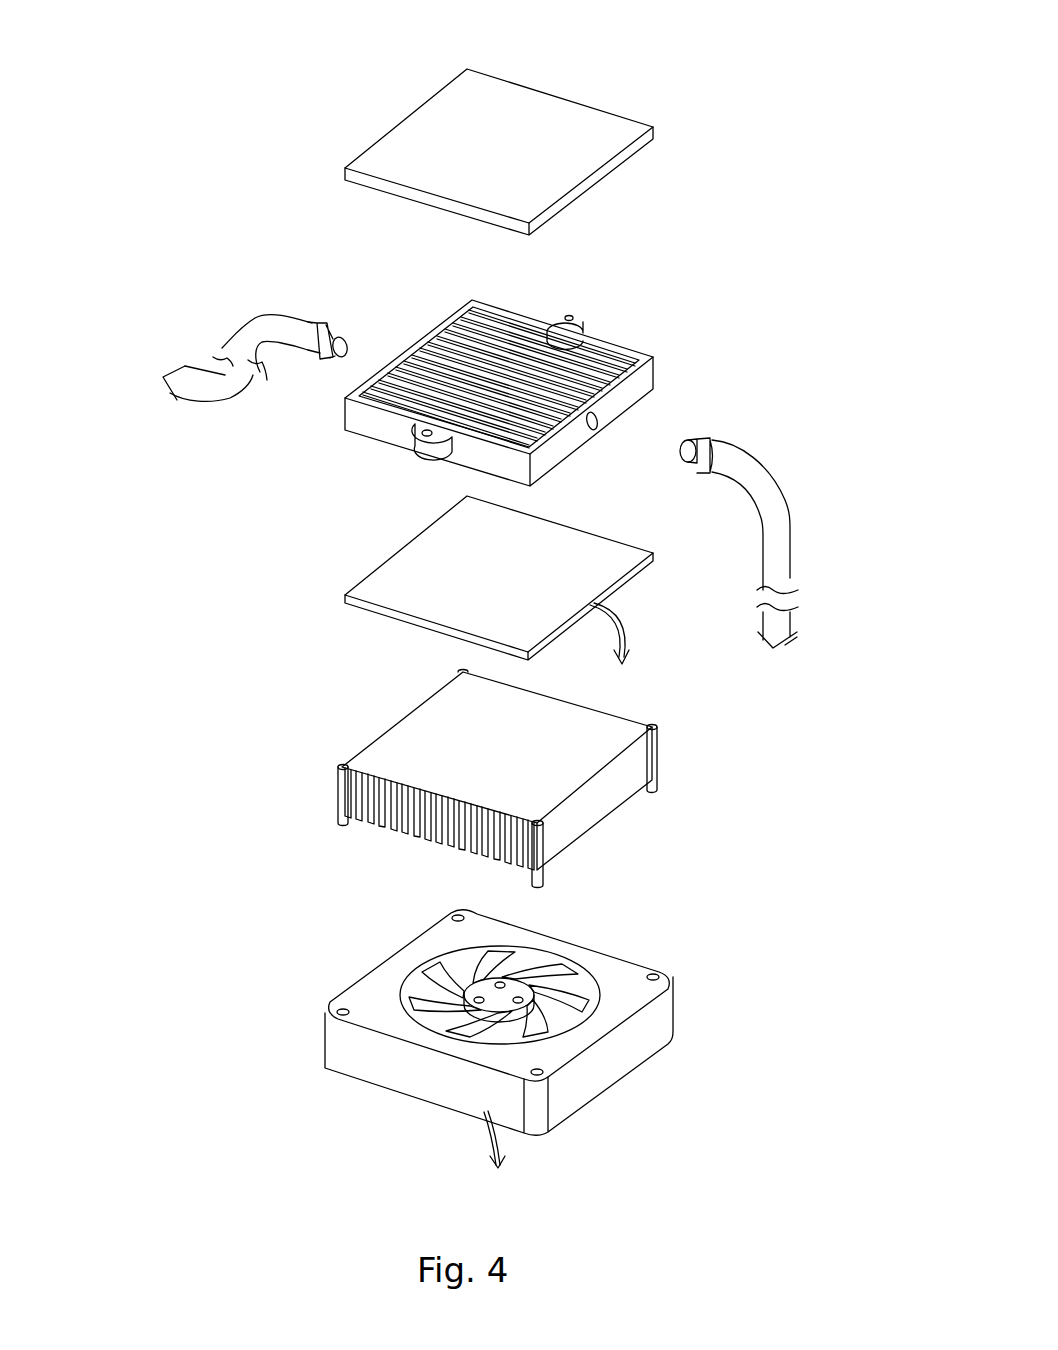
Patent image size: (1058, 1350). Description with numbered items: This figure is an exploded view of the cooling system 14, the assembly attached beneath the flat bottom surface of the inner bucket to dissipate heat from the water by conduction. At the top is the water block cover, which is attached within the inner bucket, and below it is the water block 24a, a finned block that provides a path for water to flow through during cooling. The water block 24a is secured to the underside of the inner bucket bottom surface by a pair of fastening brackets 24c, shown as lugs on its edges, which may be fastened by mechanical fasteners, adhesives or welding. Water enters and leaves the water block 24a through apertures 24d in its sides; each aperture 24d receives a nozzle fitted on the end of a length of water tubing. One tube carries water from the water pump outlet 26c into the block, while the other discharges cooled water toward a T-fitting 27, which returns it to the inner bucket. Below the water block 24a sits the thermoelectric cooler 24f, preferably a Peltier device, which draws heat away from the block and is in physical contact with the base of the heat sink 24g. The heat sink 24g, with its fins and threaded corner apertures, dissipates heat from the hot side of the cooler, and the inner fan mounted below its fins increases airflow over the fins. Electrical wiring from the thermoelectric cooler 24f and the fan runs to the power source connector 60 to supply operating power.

The cooling system 14 is at (108, 99).
The water block 24a is at (477, 333).
The fastening brackets 24c is at (572, 320).
The aperture 24d is at (596, 430).
The thermoelectric cooler 24f is at (430, 583).
The heat sink 24g is at (382, 763).
The T-fitting 27 is at (116, 377).
The water pump outlet 26c is at (775, 668).
The power source connector 60 is at (559, 937).